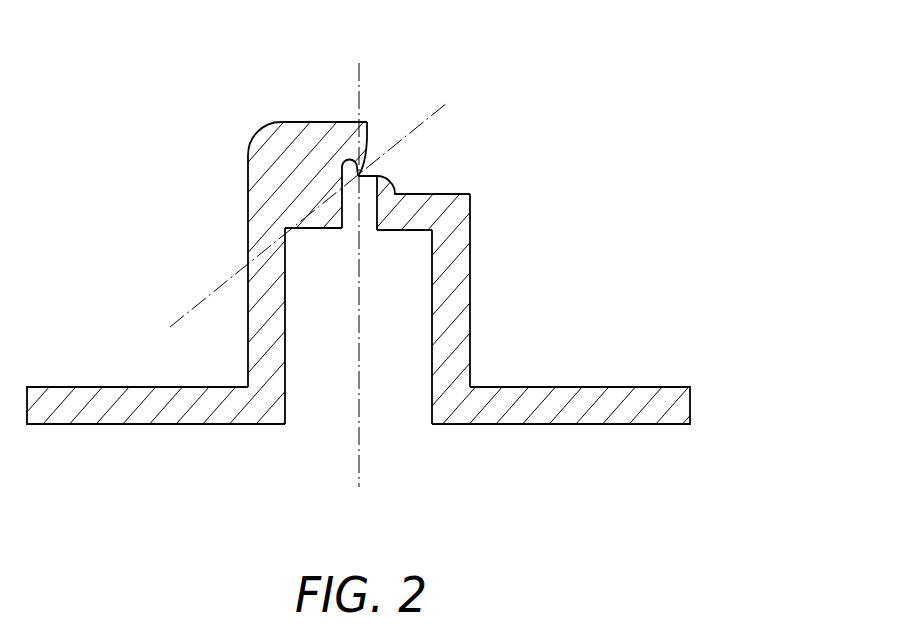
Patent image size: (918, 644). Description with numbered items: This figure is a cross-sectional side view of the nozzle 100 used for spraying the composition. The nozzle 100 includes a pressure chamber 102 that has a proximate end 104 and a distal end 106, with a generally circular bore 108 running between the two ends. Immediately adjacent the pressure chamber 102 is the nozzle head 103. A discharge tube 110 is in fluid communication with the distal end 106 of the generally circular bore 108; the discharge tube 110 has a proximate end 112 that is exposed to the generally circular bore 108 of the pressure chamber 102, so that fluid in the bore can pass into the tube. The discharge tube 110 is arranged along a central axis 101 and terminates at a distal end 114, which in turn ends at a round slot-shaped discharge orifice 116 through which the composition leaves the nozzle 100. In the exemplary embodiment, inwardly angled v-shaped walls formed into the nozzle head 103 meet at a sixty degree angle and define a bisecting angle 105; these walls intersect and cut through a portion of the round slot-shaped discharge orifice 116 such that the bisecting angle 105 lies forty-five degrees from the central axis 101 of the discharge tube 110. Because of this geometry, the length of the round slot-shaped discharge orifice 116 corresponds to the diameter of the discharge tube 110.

The nozzle 100 is at (522, 123).
The central axis 101 is at (358, 65).
The pressure chamber 102 is at (433, 345).
The nozzle head 103 is at (248, 226).
The proximate end 104 is at (285, 425).
The bisecting angle 105 is at (447, 104).
The distal end 106 is at (433, 230).
The generally circular bore 108 is at (395, 425).
The discharge tube 110 is at (342, 200).
The proximate end 112 is at (400, 196).
The distal end 114 is at (346, 159).
The round slot-shaped discharge orifice 116 is at (360, 173).